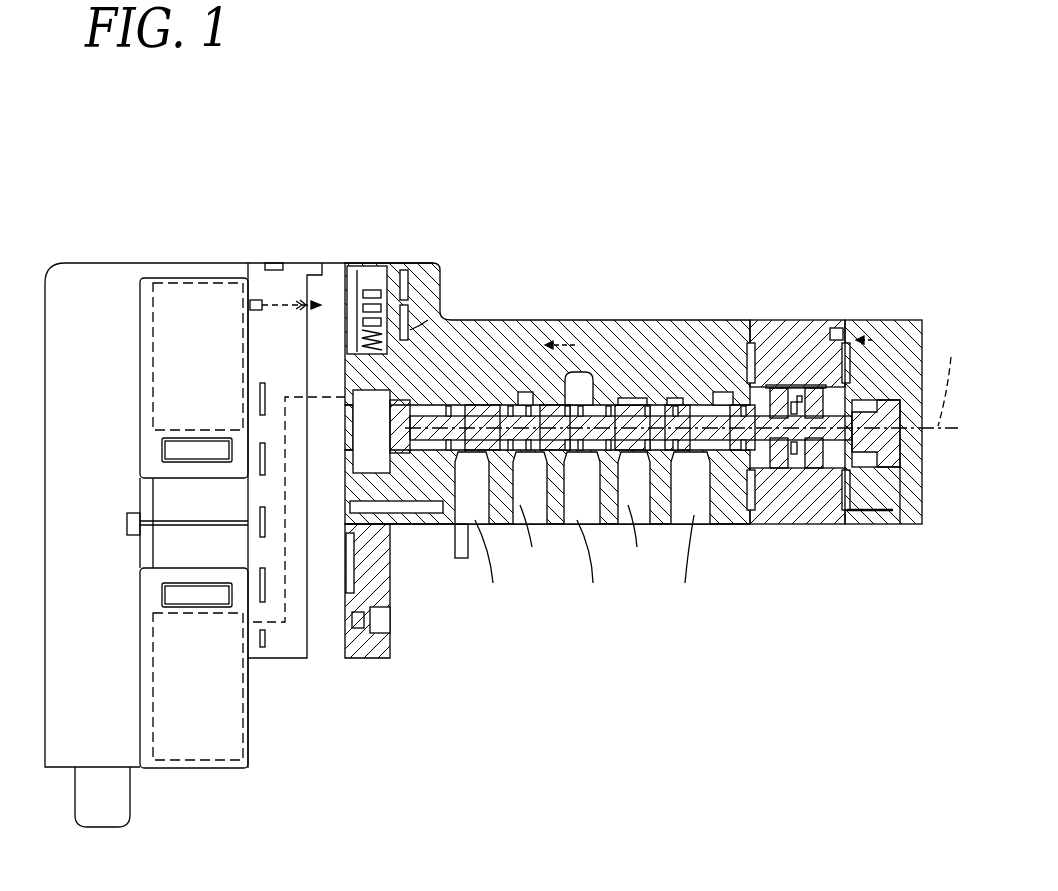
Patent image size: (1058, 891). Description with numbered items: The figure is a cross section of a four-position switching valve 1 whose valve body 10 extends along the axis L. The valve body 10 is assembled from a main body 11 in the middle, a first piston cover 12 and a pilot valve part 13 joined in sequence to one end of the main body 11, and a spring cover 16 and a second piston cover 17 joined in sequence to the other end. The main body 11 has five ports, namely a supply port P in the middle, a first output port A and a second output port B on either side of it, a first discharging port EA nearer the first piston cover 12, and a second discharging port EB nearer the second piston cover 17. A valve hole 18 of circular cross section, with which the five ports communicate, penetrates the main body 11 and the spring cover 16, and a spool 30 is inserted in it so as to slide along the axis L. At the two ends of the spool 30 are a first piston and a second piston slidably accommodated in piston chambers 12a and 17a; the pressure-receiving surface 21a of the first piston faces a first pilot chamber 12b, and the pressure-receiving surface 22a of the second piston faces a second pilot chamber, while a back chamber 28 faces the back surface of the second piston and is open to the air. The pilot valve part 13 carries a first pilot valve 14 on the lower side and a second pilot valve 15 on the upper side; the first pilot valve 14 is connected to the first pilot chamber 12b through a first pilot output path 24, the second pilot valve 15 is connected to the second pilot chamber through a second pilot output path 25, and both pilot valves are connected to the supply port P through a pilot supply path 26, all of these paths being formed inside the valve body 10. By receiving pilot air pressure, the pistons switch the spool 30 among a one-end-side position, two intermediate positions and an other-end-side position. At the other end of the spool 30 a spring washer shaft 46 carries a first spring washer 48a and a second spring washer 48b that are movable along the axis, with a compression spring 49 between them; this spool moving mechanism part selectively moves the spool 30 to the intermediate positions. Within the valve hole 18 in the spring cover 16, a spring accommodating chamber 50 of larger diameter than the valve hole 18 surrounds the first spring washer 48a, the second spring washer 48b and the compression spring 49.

The four-position switching valve 1 is at (501, 438).
The valve body 10 is at (650, 439).
The main body 11 is at (570, 318).
The first piston cover 12 is at (376, 262).
The piston chamber 12a is at (423, 526).
The first pilot chamber 12b is at (343, 602).
The pilot valve part 13 is at (258, 262).
The first pilot valve 14 is at (186, 762).
The second pilot valve 15 is at (185, 280).
The spring cover 16 is at (764, 318).
The second piston cover 17 is at (873, 318).
The piston chamber 17a is at (828, 340).
The valve hole 18 is at (717, 405).
The pressure-receiving surface 21a is at (410, 332).
The pressure-receiving surface 22a is at (915, 470).
The first pilot output path 24 is at (271, 623).
The second pilot output path 25 is at (294, 298).
The pilot supply path 26 is at (613, 345).
The back chamber 28 is at (867, 458).
The spool 30 is at (528, 398).
The spring washer shaft 46 is at (797, 470).
The first spring washer 48a is at (776, 466).
The second spring washer 48b is at (818, 466).
The compression spring 49 is at (790, 402).
The spring accommodating chamber 50 is at (800, 400).